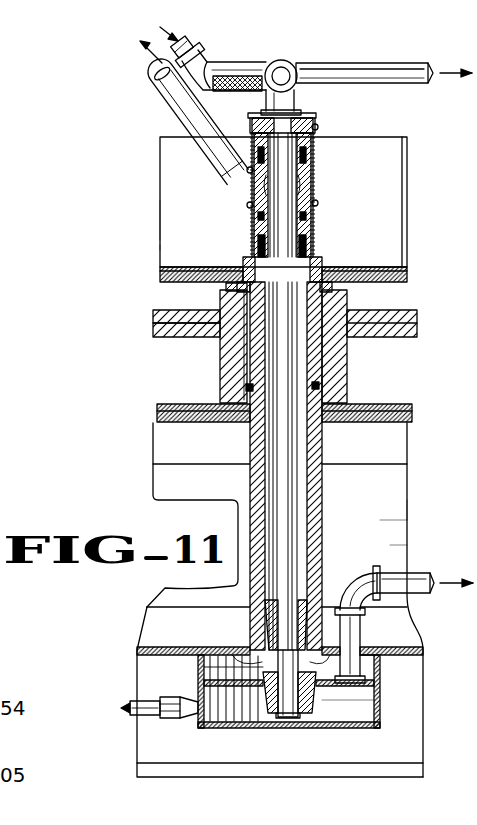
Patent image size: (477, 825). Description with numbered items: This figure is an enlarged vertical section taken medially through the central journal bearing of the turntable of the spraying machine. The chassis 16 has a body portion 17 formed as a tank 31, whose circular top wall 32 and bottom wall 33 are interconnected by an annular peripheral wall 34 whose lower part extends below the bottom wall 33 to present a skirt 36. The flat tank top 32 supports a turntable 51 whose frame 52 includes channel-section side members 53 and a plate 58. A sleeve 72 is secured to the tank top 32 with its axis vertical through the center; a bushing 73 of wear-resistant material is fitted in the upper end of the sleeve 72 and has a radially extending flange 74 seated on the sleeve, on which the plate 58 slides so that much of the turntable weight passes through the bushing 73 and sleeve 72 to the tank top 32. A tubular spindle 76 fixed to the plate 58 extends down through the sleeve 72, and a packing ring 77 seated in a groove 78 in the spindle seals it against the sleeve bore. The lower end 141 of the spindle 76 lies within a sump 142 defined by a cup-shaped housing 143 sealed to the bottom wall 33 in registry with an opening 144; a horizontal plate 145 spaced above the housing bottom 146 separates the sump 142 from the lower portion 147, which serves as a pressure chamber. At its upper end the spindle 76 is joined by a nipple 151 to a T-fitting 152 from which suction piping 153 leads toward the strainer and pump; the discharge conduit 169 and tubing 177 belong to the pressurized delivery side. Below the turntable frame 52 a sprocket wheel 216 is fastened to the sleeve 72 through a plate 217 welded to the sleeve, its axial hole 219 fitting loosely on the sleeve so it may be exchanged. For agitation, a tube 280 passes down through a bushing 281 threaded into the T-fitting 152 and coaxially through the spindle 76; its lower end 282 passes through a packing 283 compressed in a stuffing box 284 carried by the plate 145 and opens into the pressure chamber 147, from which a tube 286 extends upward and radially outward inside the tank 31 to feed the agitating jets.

The chassis 16 is at (409, 508).
The body portion 17 is at (392, 487).
The tank 31 is at (377, 525).
The top wall 32 is at (393, 406).
The bottom wall 33 is at (157, 656).
The annular peripheral wall 34 is at (387, 548).
The skirt 36 is at (152, 750).
The turntable 51 is at (150, 231).
The frame 52 is at (178, 188).
The side member 53 is at (172, 247).
The plate 58 is at (162, 274).
The sleeve 72 is at (228, 378).
The bushing 73 is at (240, 343).
The flange 74 is at (236, 284).
The tubular spindle 76 is at (254, 482).
The packing ring 77 is at (323, 384).
The groove 78 is at (319, 386).
The lower end 141 is at (255, 645).
The sump 142 is at (240, 665).
The cup-shaped housing 143 is at (381, 705).
The opening 144 is at (368, 656).
The horizontal plate 145 is at (222, 680).
The bottom 146 is at (215, 728).
The lower portion 147 is at (352, 718).
The nipple 151 is at (312, 250).
The T-fitting 152 is at (314, 213).
The piping 153 is at (204, 112).
The discharge conduit 169 is at (192, 47).
The tubing 177 is at (372, 67).
The sprocket wheel 216 is at (153, 311).
The plate 217 is at (153, 336).
The axial hole 219 is at (342, 312).
The tube 280 is at (252, 66).
The bushing 281 is at (316, 124).
The lower end 282 is at (321, 694).
The packing 283 is at (265, 700).
The stuffing box 284 is at (268, 706).
The tube 286 is at (418, 592).